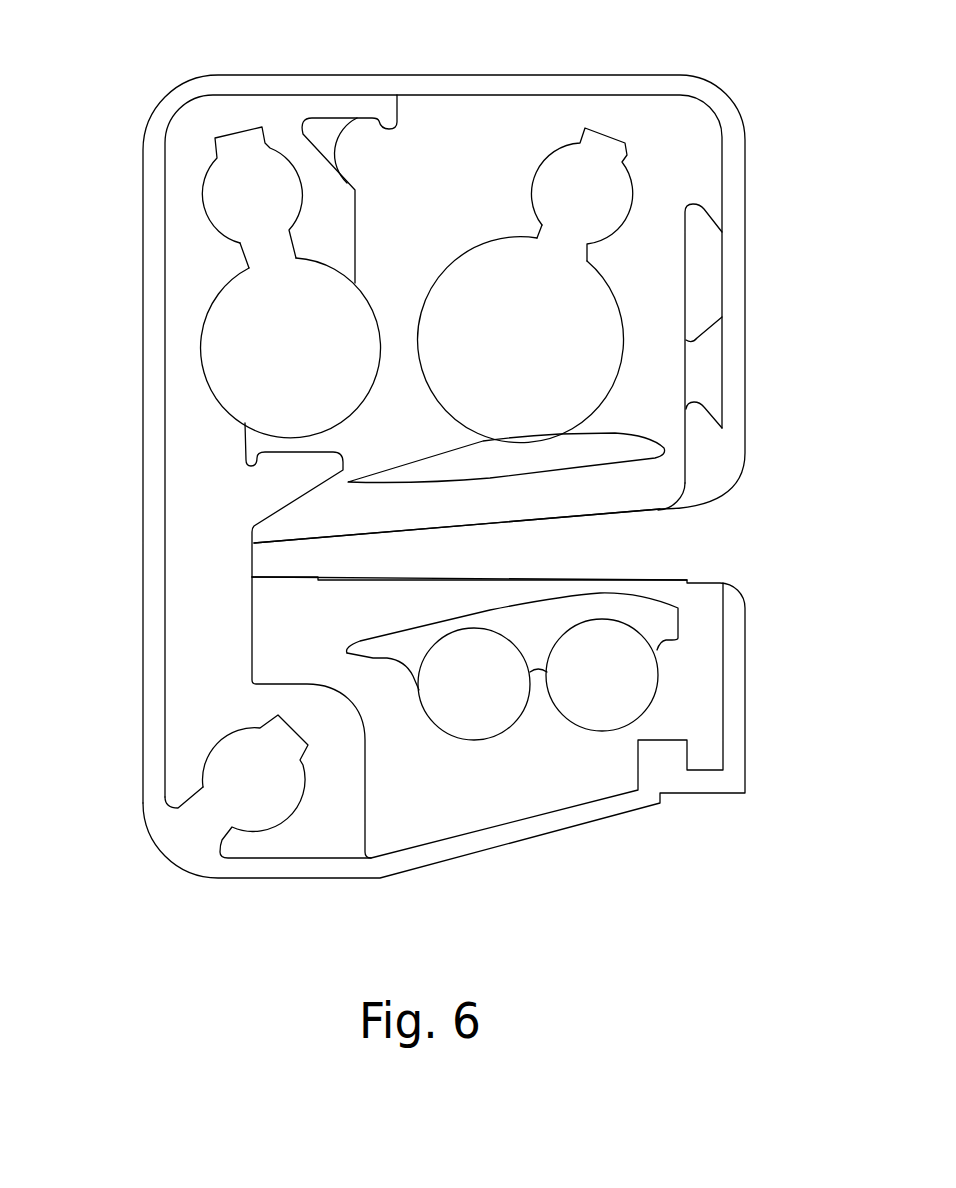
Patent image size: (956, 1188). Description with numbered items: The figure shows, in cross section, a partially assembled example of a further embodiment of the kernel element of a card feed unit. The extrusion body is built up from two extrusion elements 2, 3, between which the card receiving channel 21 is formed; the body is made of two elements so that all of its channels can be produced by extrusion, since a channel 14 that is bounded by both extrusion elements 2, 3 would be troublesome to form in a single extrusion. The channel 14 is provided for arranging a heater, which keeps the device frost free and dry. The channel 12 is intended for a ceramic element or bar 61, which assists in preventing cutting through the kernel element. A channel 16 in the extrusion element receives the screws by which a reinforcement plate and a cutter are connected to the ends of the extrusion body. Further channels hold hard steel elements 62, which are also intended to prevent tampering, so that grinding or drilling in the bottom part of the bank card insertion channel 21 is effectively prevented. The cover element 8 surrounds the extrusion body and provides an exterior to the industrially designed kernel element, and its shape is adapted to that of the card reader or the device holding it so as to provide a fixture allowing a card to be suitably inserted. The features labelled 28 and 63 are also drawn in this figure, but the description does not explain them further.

The extrusion element 2 is at (152, 678).
The extrusion element 3 is at (545, 86).
The cover element 8 is at (153, 205).
The channel 12 is at (445, 266).
The channel 14 is at (243, 384).
The channel 16 is at (267, 828).
The card receiving channel 21 is at (652, 548).
The retaining channel 28 is at (686, 276).
The ceramic element 61 is at (515, 336).
The hard steel elements 62 is at (485, 683).
The large channel 63 is at (296, 362).